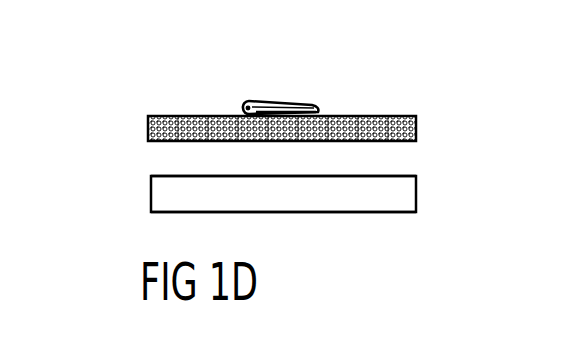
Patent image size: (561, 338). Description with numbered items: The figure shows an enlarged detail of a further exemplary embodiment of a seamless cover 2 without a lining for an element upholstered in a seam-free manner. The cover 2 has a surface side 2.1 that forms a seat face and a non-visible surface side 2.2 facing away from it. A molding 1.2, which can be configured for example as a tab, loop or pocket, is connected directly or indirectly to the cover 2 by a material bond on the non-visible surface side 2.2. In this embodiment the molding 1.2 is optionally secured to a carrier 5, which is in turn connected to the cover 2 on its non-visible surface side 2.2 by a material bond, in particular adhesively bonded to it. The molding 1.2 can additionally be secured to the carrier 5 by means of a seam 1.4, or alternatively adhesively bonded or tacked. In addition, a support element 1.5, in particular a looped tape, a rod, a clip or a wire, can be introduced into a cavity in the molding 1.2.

The carrier 5 is at (418, 128).
The molding 1.2 is at (242, 108).
The support element 1.5 is at (258, 98).
The seam 1.4 is at (310, 102).
The cover 2 is at (408, 193).
The non-visible surface side 2.2 is at (408, 176).
The surface side 2.1 is at (153, 213).